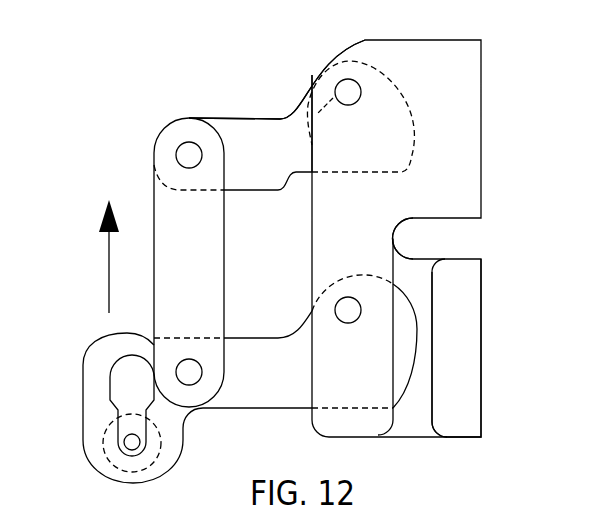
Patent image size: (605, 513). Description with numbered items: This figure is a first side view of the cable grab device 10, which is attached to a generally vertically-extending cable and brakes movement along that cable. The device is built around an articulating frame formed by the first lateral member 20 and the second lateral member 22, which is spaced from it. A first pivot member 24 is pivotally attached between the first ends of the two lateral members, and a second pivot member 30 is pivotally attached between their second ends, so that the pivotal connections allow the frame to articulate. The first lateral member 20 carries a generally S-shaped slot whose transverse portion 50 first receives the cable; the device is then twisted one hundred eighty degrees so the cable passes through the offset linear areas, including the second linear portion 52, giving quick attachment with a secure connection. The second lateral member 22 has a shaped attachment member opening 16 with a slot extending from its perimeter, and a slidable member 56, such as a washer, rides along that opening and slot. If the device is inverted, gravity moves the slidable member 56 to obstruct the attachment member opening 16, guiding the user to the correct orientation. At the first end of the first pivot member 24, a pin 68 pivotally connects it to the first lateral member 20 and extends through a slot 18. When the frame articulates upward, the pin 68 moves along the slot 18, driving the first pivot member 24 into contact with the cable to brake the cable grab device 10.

The cable grab device 10 is at (141, 113).
The attachment member opening 16 is at (132, 376).
The slot 18 is at (323, 112).
The first lateral member 20 is at (438, 110).
The second lateral member 22 is at (170, 210).
The first pivot member 24 is at (257, 142).
The second pivot member 30 is at (257, 372).
The transverse portion 50 is at (477, 238).
The second linear portion 52 is at (417, 422).
The slidable member 56 is at (123, 418).
The pin 68 is at (350, 91).